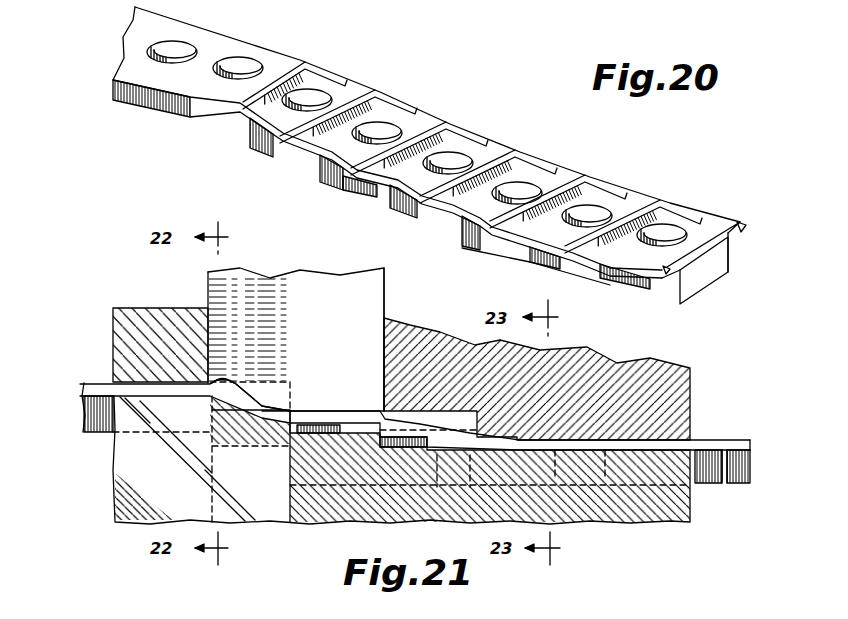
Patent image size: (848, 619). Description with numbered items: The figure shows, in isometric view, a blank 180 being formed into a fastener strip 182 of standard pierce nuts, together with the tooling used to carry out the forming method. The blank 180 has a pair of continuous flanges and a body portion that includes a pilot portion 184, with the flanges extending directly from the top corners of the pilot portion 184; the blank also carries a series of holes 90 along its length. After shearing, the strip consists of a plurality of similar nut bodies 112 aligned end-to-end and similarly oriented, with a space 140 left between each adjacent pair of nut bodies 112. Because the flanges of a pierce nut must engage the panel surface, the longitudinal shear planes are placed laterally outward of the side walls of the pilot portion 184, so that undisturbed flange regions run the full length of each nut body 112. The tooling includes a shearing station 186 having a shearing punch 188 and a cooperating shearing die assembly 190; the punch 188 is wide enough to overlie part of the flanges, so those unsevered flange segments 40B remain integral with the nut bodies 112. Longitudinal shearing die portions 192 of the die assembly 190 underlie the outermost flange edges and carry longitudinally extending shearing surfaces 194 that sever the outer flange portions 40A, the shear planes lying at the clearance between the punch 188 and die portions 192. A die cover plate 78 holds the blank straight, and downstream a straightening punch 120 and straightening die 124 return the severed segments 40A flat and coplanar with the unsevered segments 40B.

In FIG. 20, the blank 180 is at (122, 40).
In FIG. 21, the blank 180 is at (100, 378).
In FIG. 20, the hole 90 is at (243, 60).
In FIG. 20, the severed flange segments 40A is at (325, 62).
In FIG. 21, the severed flange segments 40A is at (258, 382).
In FIG. 20, the unsevered flange segments 40B is at (365, 72).
In FIG. 21, the unsevered flange segments 40B is at (289, 381).
In FIG. 20, the nut body 112 is at (325, 170).
In FIG. 21, the nut body 112 is at (287, 483).
In FIG. 20, the space 140 is at (530, 252).
In FIG. 21, the space 140 is at (585, 440).
In FIG. 20, the pilot portion 184 is at (152, 106).
In FIG. 21, the pilot portion 184 is at (103, 437).
In FIG. 20, the fastener strip 182 is at (712, 298).
In FIG. 21, the fastener strip 182 is at (744, 410).
In FIG. 21, the die cover plate 78 is at (130, 310).
In FIG. 21, the shearing station 186 is at (205, 300).
In FIG. 21, the shearing punch 188 is at (370, 292).
In FIG. 21, the shearing die assembly 190 is at (140, 527).
In FIG. 21, the longitudinal shearing die portions 192 is at (258, 523).
In FIG. 21, the longitudinally extending shearing surfaces 194 is at (220, 382).
In FIG. 21, the straightening punch 120 is at (650, 368).
In FIG. 21, the straightening die 124 is at (620, 520).